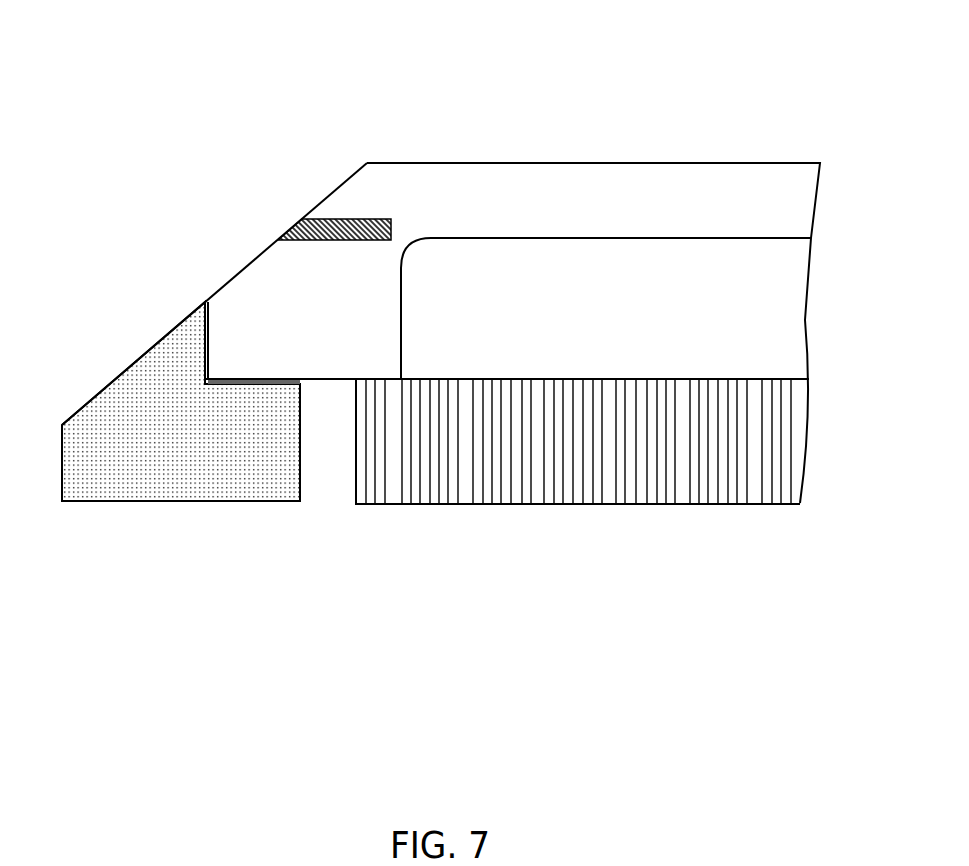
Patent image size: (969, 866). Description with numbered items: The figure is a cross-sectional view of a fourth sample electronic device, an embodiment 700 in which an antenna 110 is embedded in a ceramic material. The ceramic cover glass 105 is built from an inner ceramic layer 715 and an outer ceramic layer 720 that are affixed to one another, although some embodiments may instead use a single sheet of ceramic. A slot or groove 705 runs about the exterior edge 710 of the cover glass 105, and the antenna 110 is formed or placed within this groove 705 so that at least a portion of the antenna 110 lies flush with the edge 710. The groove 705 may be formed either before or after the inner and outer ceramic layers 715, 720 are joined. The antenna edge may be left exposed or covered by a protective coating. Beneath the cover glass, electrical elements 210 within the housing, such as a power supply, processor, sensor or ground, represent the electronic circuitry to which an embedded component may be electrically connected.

The embodiment 700 is at (343, 33).
The cover glass 105 is at (700, 162).
The antenna 110 is at (290, 227).
The slot or groove 705 is at (332, 218).
The exterior edge 710 is at (227, 282).
The inner ceramic layer 715 is at (543, 183).
The outer ceramic layer 720 is at (753, 312).
The electrical elements 210 is at (502, 505).